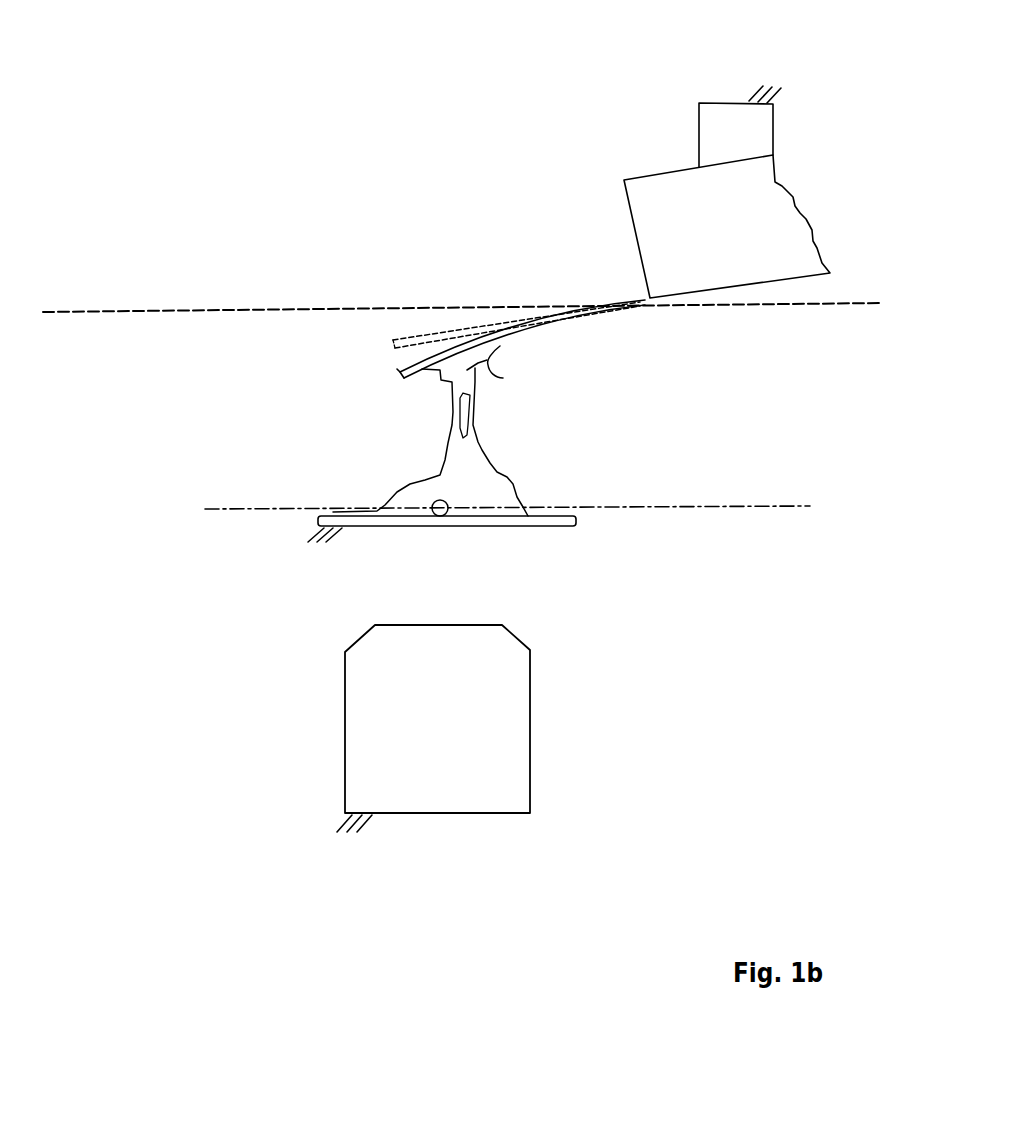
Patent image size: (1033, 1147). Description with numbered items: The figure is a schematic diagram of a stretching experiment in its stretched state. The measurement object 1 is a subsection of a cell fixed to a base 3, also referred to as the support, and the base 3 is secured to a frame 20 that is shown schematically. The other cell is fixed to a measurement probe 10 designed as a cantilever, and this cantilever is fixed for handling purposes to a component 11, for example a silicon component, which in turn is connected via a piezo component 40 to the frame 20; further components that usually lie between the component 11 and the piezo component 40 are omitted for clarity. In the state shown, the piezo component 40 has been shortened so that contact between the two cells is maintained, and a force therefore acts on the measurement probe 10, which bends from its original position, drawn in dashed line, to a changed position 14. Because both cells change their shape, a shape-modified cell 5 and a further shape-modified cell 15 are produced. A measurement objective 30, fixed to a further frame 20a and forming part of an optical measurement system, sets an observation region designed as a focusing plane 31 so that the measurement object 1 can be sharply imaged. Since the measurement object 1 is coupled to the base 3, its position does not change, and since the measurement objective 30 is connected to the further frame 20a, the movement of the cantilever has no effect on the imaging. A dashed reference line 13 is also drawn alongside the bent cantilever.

The measurement object 1 is at (430, 518).
The base 3 is at (578, 521).
The shape-modified cell 5 is at (410, 494).
The measurement probe 10 is at (438, 354).
The component 11 is at (797, 237).
The reference plane 13 is at (810, 308).
The changed position 14 is at (397, 369).
The further shape-modified cell 15 is at (503, 378).
The frame 20 is at (773, 80).
The further frame 20a is at (350, 840).
The measurement objective 30 is at (512, 717).
The focusing plane 31 is at (742, 508).
The piezo component 40 is at (760, 137).